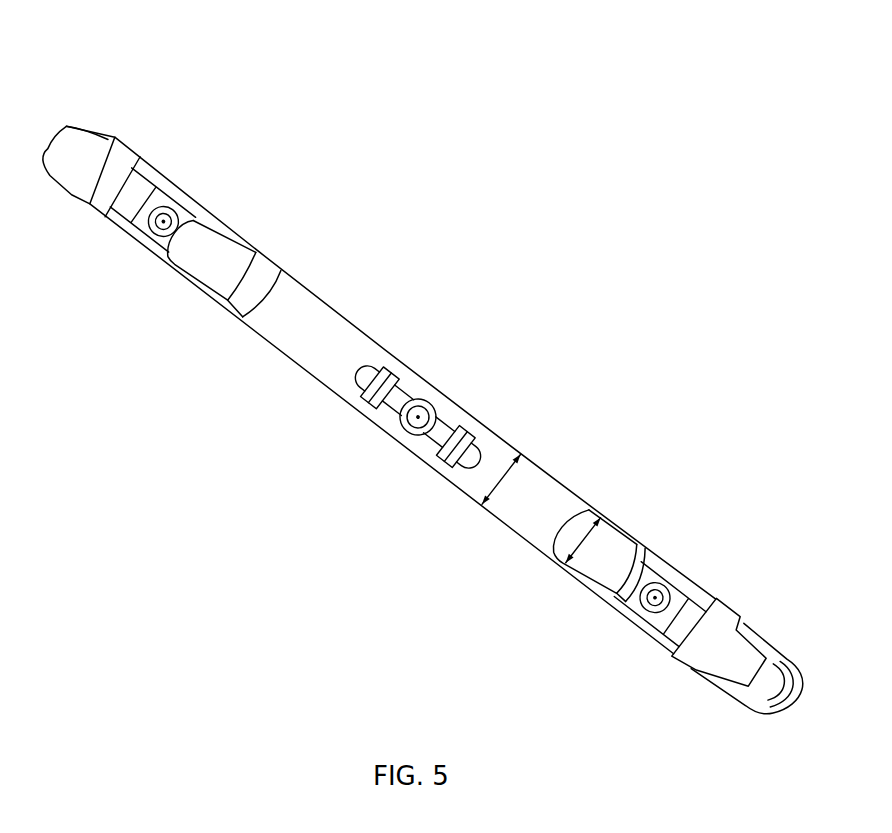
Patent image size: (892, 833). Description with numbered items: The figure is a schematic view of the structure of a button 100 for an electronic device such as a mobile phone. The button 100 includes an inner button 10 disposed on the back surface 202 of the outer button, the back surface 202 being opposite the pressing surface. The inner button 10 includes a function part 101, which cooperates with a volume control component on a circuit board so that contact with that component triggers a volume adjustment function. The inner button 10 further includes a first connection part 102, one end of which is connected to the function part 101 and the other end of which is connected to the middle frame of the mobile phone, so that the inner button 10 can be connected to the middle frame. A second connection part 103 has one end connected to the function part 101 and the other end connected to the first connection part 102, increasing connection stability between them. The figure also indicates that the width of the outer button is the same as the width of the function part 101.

The button 100 is at (143, 62).
The inner button 10 is at (47, 250).
The function part 101 is at (207, 270).
The first connection part 102 is at (87, 190).
The second connection part 103 is at (147, 233).
The back surface 202 is at (347, 343).